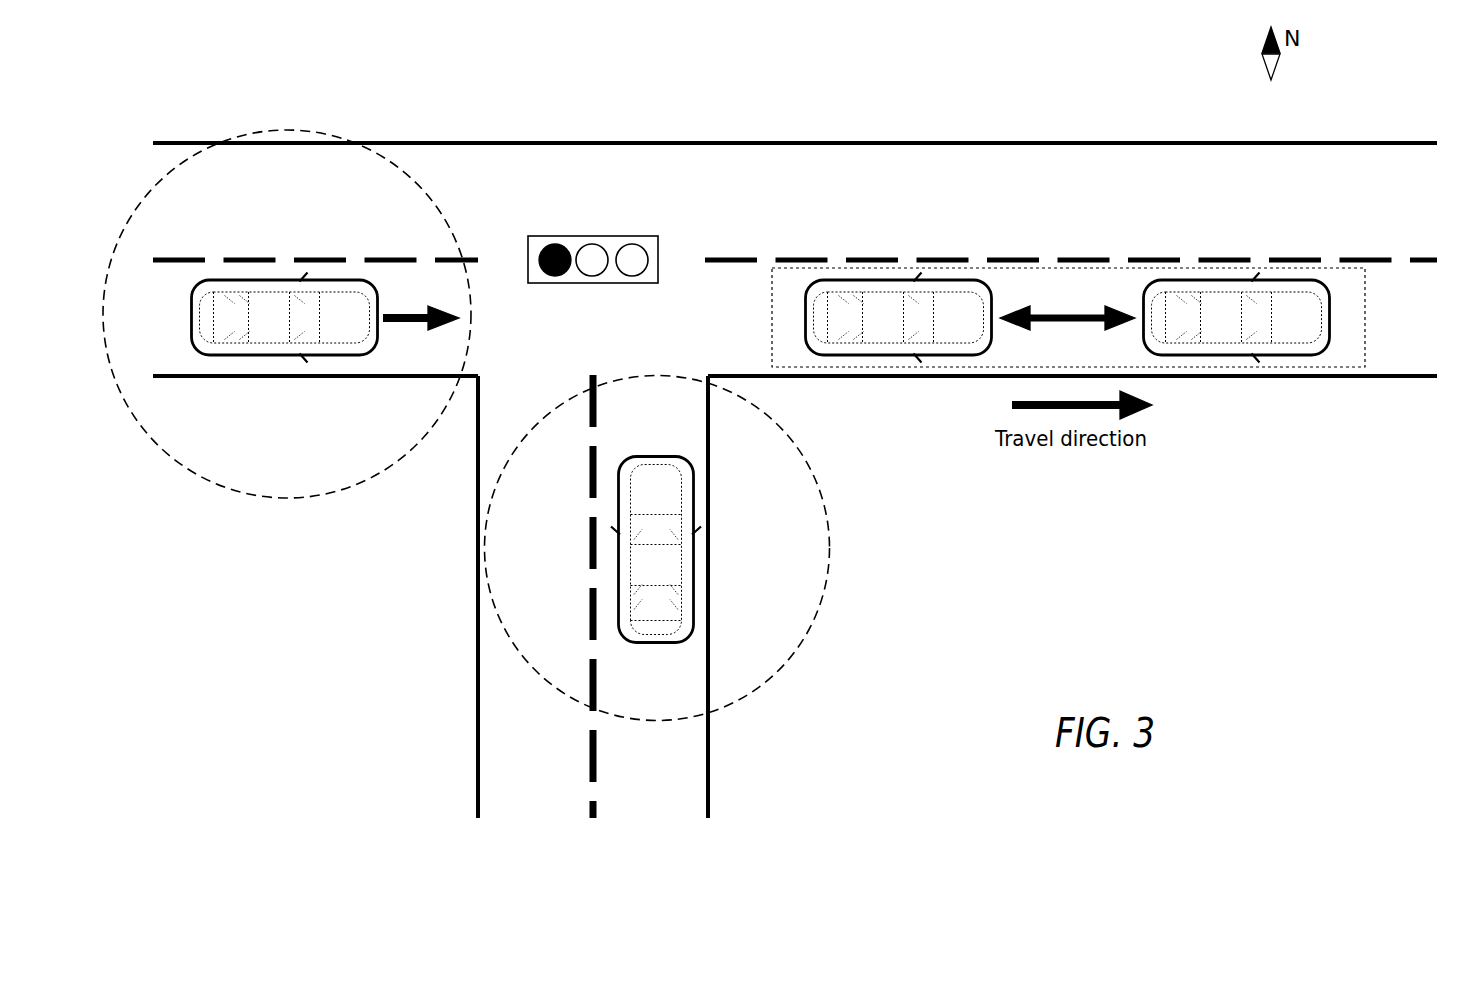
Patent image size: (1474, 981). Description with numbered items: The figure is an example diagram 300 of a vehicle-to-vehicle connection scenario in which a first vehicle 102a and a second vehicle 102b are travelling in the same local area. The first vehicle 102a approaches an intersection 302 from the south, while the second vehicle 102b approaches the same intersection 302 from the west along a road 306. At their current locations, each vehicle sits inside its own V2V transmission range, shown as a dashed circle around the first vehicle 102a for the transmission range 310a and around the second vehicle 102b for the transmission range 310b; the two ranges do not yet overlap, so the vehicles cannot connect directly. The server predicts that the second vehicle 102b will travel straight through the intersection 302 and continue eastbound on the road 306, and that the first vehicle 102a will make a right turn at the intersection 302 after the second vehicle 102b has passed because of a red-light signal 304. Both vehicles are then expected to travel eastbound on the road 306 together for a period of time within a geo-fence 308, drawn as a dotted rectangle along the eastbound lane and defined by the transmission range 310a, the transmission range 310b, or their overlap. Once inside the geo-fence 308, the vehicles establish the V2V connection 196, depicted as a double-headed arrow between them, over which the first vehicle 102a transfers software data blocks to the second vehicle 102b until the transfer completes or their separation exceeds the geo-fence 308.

The example diagram 300 is at (1115, 655).
The intersection 302 is at (512, 172).
The red-light signal 304 is at (643, 236).
The road 306 is at (1100, 190).
The geo-fence 308 is at (1320, 368).
The V2V transmission range of the first vehicle 310a is at (829, 543).
The V2V transmission range of the second vehicle 310b is at (290, 130).
The first vehicle 102a is at (910, 282).
The second vehicle 102b is at (297, 284).
The V2V connection 196 is at (1068, 310).